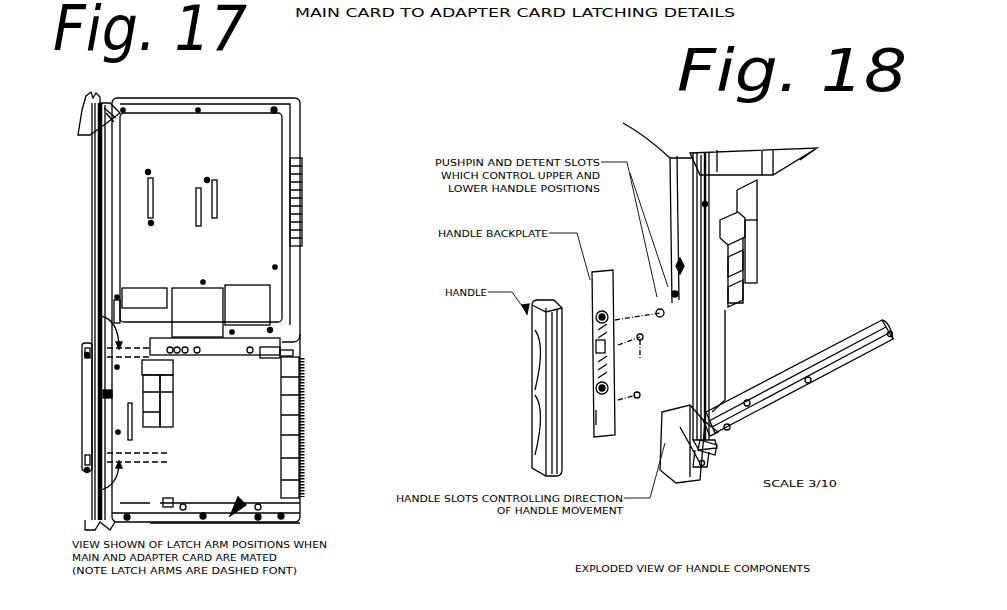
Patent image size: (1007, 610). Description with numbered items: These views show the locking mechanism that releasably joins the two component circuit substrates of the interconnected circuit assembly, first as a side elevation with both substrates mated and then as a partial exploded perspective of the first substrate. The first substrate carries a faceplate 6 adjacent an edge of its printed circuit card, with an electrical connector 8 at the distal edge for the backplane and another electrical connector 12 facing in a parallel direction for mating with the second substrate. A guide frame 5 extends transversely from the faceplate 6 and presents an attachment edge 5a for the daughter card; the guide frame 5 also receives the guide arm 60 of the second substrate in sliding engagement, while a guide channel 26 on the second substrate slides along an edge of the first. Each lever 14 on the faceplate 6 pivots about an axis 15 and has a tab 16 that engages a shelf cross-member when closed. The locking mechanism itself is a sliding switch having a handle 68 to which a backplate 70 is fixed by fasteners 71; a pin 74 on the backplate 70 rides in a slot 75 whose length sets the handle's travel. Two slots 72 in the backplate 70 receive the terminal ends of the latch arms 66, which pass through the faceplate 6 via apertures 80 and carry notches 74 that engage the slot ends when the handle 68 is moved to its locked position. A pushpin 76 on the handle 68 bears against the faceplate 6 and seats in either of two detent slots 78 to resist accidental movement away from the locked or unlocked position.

In FIG. 17, the guide frame 5 is at (232, 515).
In FIG. 18, the guide frame 5 is at (781, 372).
In FIG. 17, the attachment edge 5a is at (280, 517).
In FIG. 18, the attachment edge 5a is at (787, 393).
In FIG. 17, the faceplate 6 is at (92, 278).
In FIG. 18, the faceplate 6 is at (638, 398).
In FIG. 17, the electrical connector 8 is at (298, 214).
In FIG. 18, the electrical connector 12 is at (760, 257).
In FIG. 18, the lever 14 is at (700, 466).
In FIG. 18, the axis 15 is at (707, 443).
In FIG. 18, the tab 16 is at (701, 464).
In FIG. 17, the guide channel 26 is at (235, 333).
In FIG. 17, the guide arm 60 is at (212, 502).
In FIG. 17, the latch arm 66 is at (92, 313).
In FIG. 17, the handle 68 is at (78, 417).
In FIG. 18, the handle 68 is at (530, 332).
In FIG. 18, the backplate 70 is at (632, 268).
In FIG. 18, the fastener 71 is at (667, 297).
In FIG. 18, the slot 72 is at (593, 282).
In FIG. 17, the pin 74 is at (89, 359).
In FIG. 18, the pin 74 is at (680, 266).
In FIG. 18, the slot 75 is at (680, 262).
In FIG. 18, the pushpin 76 is at (655, 368).
In FIG. 18, the detent slot 78 is at (668, 303).
In FIG. 18, the aperture 80 is at (675, 292).